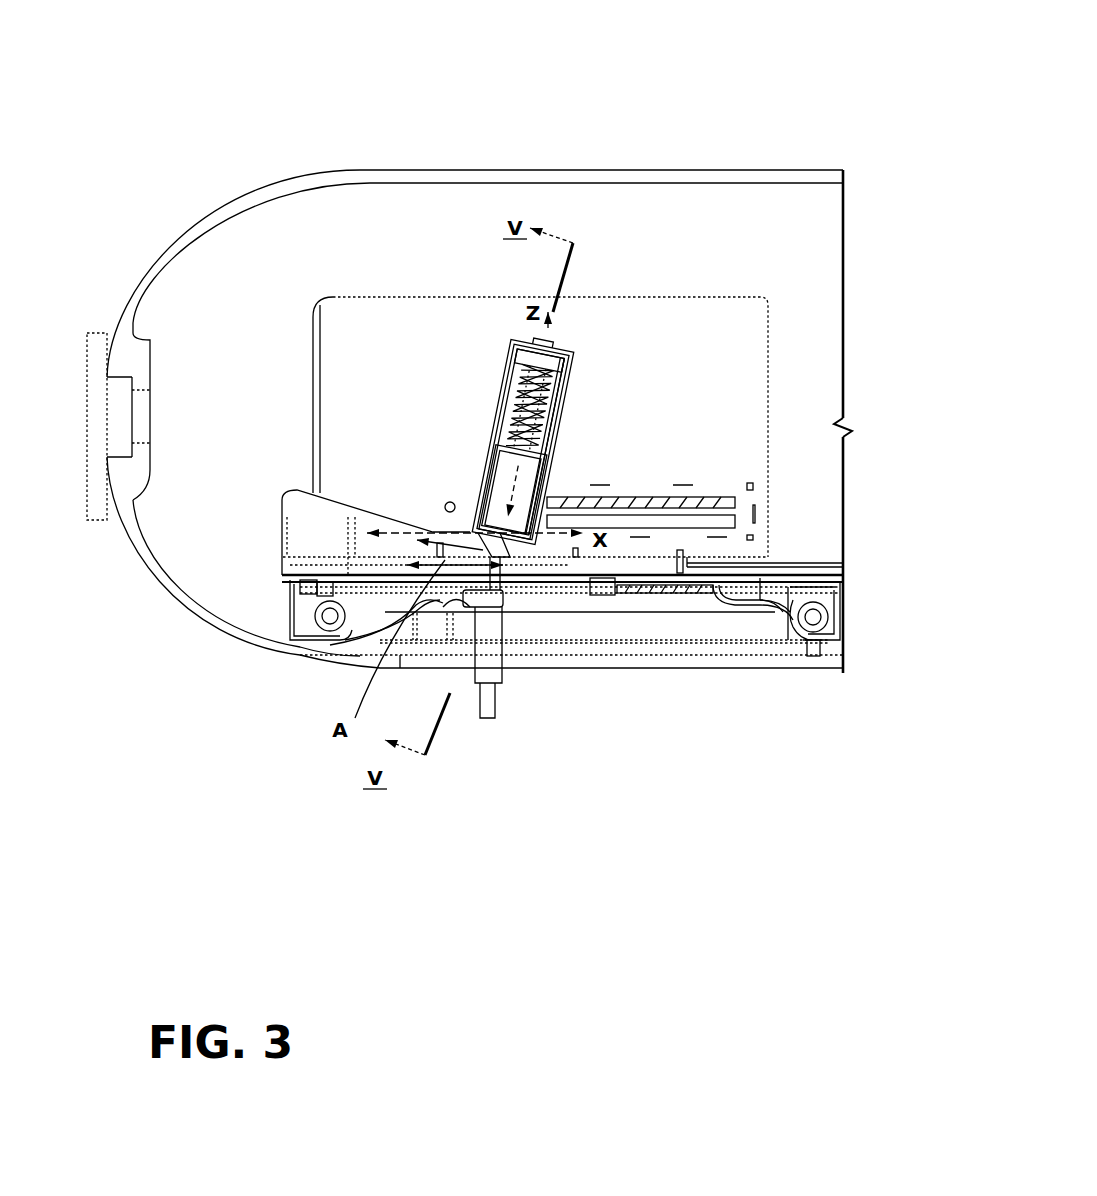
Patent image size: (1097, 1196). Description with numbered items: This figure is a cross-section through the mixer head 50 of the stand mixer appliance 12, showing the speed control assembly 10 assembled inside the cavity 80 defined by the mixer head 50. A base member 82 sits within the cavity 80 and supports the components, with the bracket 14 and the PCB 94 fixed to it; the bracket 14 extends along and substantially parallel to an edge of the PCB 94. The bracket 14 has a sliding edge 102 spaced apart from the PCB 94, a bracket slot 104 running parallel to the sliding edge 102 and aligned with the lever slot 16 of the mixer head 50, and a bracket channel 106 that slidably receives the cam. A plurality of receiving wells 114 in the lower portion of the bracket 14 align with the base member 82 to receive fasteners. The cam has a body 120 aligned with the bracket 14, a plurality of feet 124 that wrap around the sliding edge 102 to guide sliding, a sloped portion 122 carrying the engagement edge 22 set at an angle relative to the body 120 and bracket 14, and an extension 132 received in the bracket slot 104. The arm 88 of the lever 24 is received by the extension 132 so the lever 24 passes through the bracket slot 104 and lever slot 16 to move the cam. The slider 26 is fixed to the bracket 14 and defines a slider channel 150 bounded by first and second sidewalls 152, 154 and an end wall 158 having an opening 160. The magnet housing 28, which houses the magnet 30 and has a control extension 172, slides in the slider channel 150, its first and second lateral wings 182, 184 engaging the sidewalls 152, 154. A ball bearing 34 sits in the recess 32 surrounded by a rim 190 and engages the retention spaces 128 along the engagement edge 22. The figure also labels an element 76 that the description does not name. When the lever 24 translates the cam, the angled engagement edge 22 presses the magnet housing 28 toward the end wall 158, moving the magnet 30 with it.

The speed control assembly 10 is at (683, 243).
The appliance 12 is at (688, 100).
The bracket 14 is at (848, 603).
The lever slot 16 is at (567, 615).
The engagement edge 22 is at (133, 325).
The lever 24 is at (500, 690).
The slider 26 is at (330, 497).
The magnet housing 28 is at (445, 503).
The magnet 30 is at (545, 522).
The recess 32 is at (508, 572).
The ball bearing 34 is at (455, 635).
The mixer head 50 is at (350, 663).
The spring 76 is at (495, 410).
The cavity 80 is at (747, 627).
The base member 82 is at (632, 665).
The arm 88 is at (488, 683).
The PCB 94 is at (723, 382).
The sliding edge 102 is at (760, 580).
The bracket slot 104 is at (668, 593).
The bracket channel 106 is at (823, 570).
The receiving wells 114 is at (837, 618).
The body 120 is at (298, 568).
The sloped portion 122 is at (298, 537).
The feet 124 is at (317, 590).
The retention spaces 128 is at (347, 497).
The extension 132 is at (470, 597).
The slider channel 150 is at (556, 385).
The first sidewall 152 is at (480, 505).
The second sidewall 154 is at (567, 410).
The end wall 158 is at (563, 372).
The opening 160 is at (530, 327).
The control extension 172 is at (567, 395).
The first lateral wing 182 is at (478, 505).
The second lateral wing 184 is at (540, 498).
The rim 190 is at (540, 583).